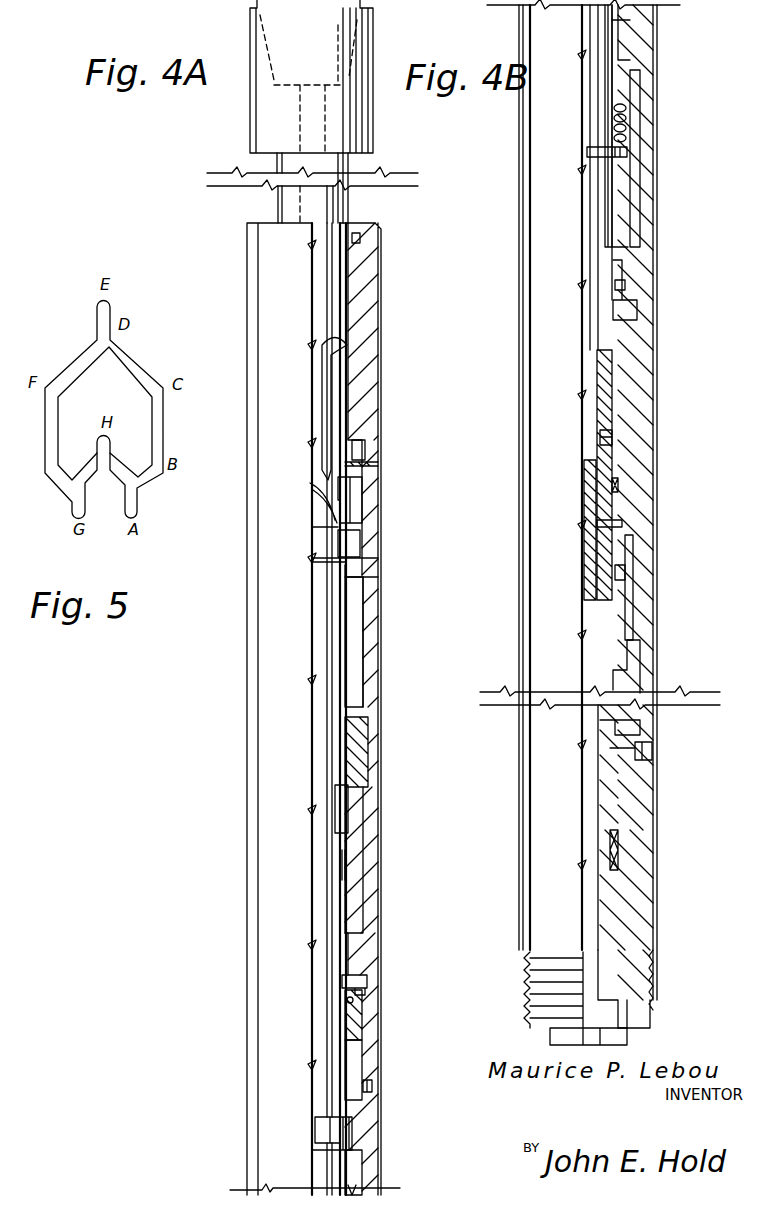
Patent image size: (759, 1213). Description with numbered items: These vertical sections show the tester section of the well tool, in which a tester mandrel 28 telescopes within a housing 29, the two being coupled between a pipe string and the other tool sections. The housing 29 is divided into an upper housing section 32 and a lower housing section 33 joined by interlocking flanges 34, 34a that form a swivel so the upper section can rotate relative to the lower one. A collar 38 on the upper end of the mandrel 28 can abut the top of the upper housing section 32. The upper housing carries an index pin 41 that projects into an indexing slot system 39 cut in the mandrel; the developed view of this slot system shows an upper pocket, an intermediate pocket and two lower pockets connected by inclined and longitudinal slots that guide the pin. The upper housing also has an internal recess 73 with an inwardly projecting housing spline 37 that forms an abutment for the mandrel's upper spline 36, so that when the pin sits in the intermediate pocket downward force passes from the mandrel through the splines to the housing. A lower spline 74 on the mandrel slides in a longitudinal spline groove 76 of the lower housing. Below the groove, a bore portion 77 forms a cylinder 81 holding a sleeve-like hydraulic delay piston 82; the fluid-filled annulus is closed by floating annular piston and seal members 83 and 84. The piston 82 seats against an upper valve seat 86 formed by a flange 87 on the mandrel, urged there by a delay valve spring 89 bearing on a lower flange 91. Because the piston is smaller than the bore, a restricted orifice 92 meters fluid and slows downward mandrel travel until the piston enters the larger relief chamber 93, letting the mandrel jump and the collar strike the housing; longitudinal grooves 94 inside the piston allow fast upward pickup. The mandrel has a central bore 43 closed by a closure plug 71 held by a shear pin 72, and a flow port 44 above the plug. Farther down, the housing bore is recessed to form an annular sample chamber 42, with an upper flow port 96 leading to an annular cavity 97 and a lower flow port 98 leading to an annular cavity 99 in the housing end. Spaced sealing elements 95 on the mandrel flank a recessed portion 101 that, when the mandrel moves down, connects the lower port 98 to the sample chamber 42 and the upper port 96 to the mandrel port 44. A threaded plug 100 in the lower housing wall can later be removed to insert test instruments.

In FIG. 4A, the collar 38 is at (375, 137).
In FIG. 4A, the tester mandrel 28 is at (350, 208).
In FIG. 4B, the tester mandrel 28 is at (612, 208).
In FIG. 4A, the housing 29 is at (378, 368).
In FIG. 4A, the indexing slot system 39 is at (330, 388).
In FIG. 5, the indexing slot system 39 is at (80, 368).
In FIG. 4A, the index pin 41 is at (365, 448).
In FIG. 4A, the internal recess 73 is at (370, 500).
In FIG. 4A, the upper spline 36 is at (355, 540).
In FIG. 4A, the housing spline 37 is at (355, 572).
In FIG. 4A, the upper housing section 32 is at (370, 630).
In FIG. 4A, the flange 34 is at (370, 760).
In FIG. 4A, the flange 34a is at (370, 807).
In FIG. 4A, the lower spline 74 is at (352, 826).
In FIG. 4A, the spline groove 76 is at (347, 867).
In FIG. 4A, the floating annular piston and seal member 83 is at (365, 997).
In FIG. 4A, the lower housing section 33 is at (365, 1030).
In FIG. 4A, the cylinder 81 is at (350, 1058).
In FIG. 4A, the bore portion 77 is at (355, 1073).
In FIG. 4A, the flange 87 is at (315, 1130).
In FIG. 4A, the valve seat 86 is at (350, 1138).
In FIG. 4A, the longitudinal grooves 94 is at (340, 1160).
In FIG. 4B, the longitudinal grooves 94 is at (612, 25).
In FIG. 4A, the hydraulic delay piston 82 is at (352, 1165).
In FIG. 4B, the hydraulic delay piston 82 is at (628, 40).
In FIG. 4A, the restricted orifice 92 is at (365, 1185).
In FIG. 4B, the delay valve spring 89 is at (630, 120).
In FIG. 4B, the lower flange 91 is at (630, 150).
In FIG. 4B, the relief chamber 93 is at (632, 173).
In FIG. 4B, the floating annular piston and seal member 84 is at (630, 305).
In FIG. 4B, the central bore 43 is at (592, 370).
In FIG. 4B, the flow port 44 is at (605, 442).
In FIG. 4B, the closure plug 71 is at (590, 483).
In FIG. 4B, the sealing elements 95 is at (692, 848).
In FIG. 4B, the shear pin 72 is at (614, 525).
In FIG. 4B, the annular cavity 97 is at (630, 548).
In FIG. 4B, the flow port 96 is at (620, 578).
In FIG. 4B, the sample chamber 42 is at (630, 655).
In FIG. 4B, the recessed portion 101 is at (615, 730).
In FIG. 4B, the plug 100 is at (650, 752).
In FIG. 4B, the flow port 98 is at (620, 998).
In FIG. 4B, the annular cavity 99 is at (632, 1012).